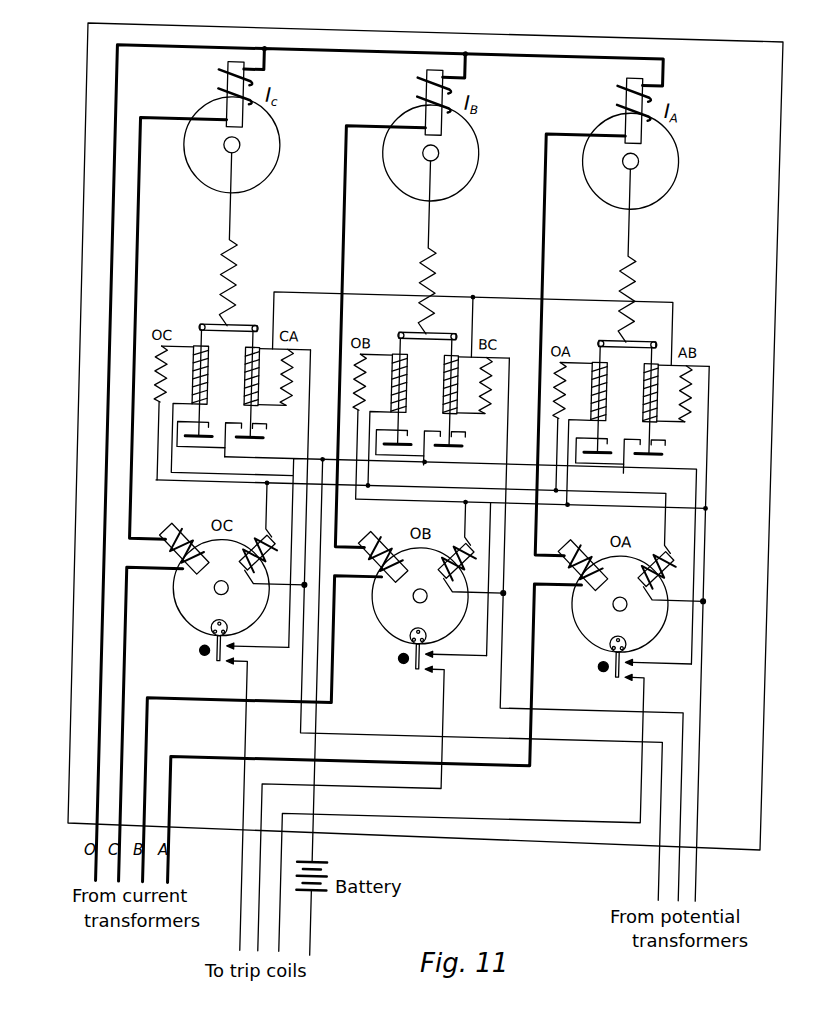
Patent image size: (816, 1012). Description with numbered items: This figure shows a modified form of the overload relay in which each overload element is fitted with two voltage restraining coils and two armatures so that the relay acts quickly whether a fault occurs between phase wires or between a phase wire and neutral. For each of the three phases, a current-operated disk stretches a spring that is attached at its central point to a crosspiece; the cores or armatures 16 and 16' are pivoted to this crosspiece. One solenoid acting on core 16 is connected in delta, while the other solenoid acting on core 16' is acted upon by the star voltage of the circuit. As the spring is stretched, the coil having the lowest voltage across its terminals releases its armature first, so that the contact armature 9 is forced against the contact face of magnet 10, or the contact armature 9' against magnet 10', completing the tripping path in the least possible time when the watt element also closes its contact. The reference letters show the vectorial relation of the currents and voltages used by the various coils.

The contact armature 9 is at (261, 439).
The contact armature 9' is at (198, 453).
The contact magnet 10 is at (259, 437).
The contact magnet 10' is at (205, 423).
The core 16 is at (264, 366).
The core 16' is at (189, 363).